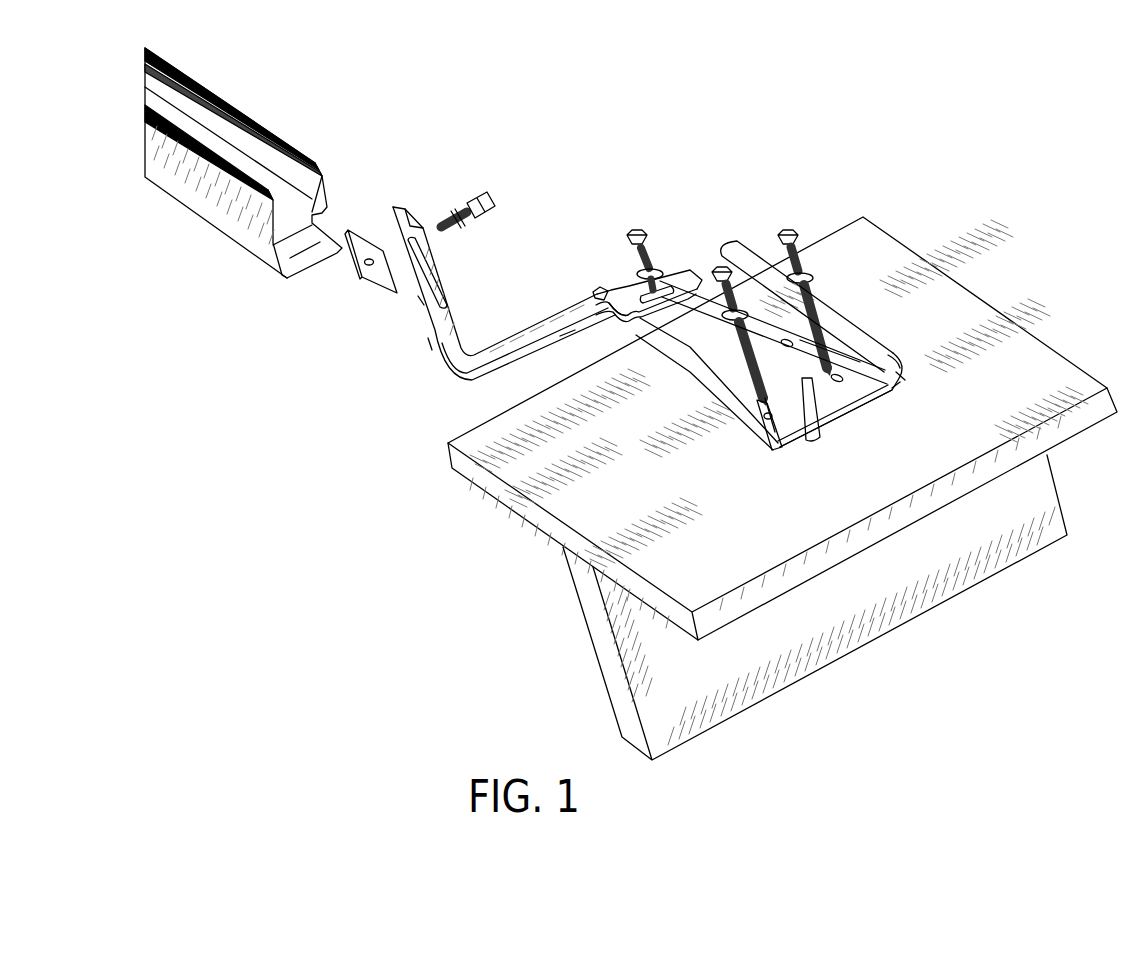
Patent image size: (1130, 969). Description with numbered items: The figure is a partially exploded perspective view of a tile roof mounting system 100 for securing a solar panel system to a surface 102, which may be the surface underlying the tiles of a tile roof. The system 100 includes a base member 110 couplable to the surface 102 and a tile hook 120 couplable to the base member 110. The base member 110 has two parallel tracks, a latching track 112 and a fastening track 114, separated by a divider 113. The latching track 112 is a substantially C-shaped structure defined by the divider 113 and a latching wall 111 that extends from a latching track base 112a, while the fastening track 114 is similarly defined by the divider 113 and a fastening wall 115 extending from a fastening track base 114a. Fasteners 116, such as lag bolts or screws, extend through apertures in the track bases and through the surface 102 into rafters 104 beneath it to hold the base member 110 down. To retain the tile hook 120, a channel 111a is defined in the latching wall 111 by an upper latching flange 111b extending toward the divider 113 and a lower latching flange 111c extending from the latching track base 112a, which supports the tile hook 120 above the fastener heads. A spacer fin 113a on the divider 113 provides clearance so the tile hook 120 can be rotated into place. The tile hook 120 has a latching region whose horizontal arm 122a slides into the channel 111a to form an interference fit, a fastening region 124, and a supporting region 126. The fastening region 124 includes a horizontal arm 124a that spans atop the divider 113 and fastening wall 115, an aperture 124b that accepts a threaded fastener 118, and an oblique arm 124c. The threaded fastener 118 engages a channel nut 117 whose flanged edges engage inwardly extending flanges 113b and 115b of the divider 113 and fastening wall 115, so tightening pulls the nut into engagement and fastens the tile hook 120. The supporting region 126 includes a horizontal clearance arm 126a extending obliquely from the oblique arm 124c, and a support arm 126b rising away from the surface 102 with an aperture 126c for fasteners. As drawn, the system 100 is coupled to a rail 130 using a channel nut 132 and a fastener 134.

The tile roof mounting system 100 is at (837, 178).
The surface 102 is at (468, 431).
The rafters 104 is at (587, 595).
The base member 110 is at (885, 280).
The latching wall 111 is at (880, 348).
The channel 111a is at (903, 377).
The upper latching flange 111b is at (888, 353).
The lower latching flange 111c is at (900, 383).
The latching track 112 is at (838, 368).
The latching track base 112a is at (863, 393).
The divider 113 is at (845, 436).
The spacer fin 113a is at (857, 400).
The flange 113b is at (813, 400).
The fastening track 114 is at (719, 350).
The fastening track base 114a is at (773, 433).
The fastening wall 115 is at (747, 413).
The flange 115b is at (760, 437).
The fasteners 116 is at (800, 254).
The channel nut 117 is at (620, 325).
The threaded fastener 118 is at (643, 228).
The tile hook 120 is at (428, 371).
The horizontal arm 122a is at (742, 277).
The fastening region 124 is at (649, 296).
The horizontal arm 124a is at (682, 312).
The aperture 124b is at (668, 290).
The oblique arm 124c is at (608, 292).
The supporting region 126 is at (479, 323).
The horizontal clearance arm 126a is at (572, 342).
The support arm 126b is at (428, 338).
The aperture 126c is at (420, 303).
The rail 130 is at (240, 247).
The channel nut 132 is at (363, 277).
The fastener 134 is at (497, 200).